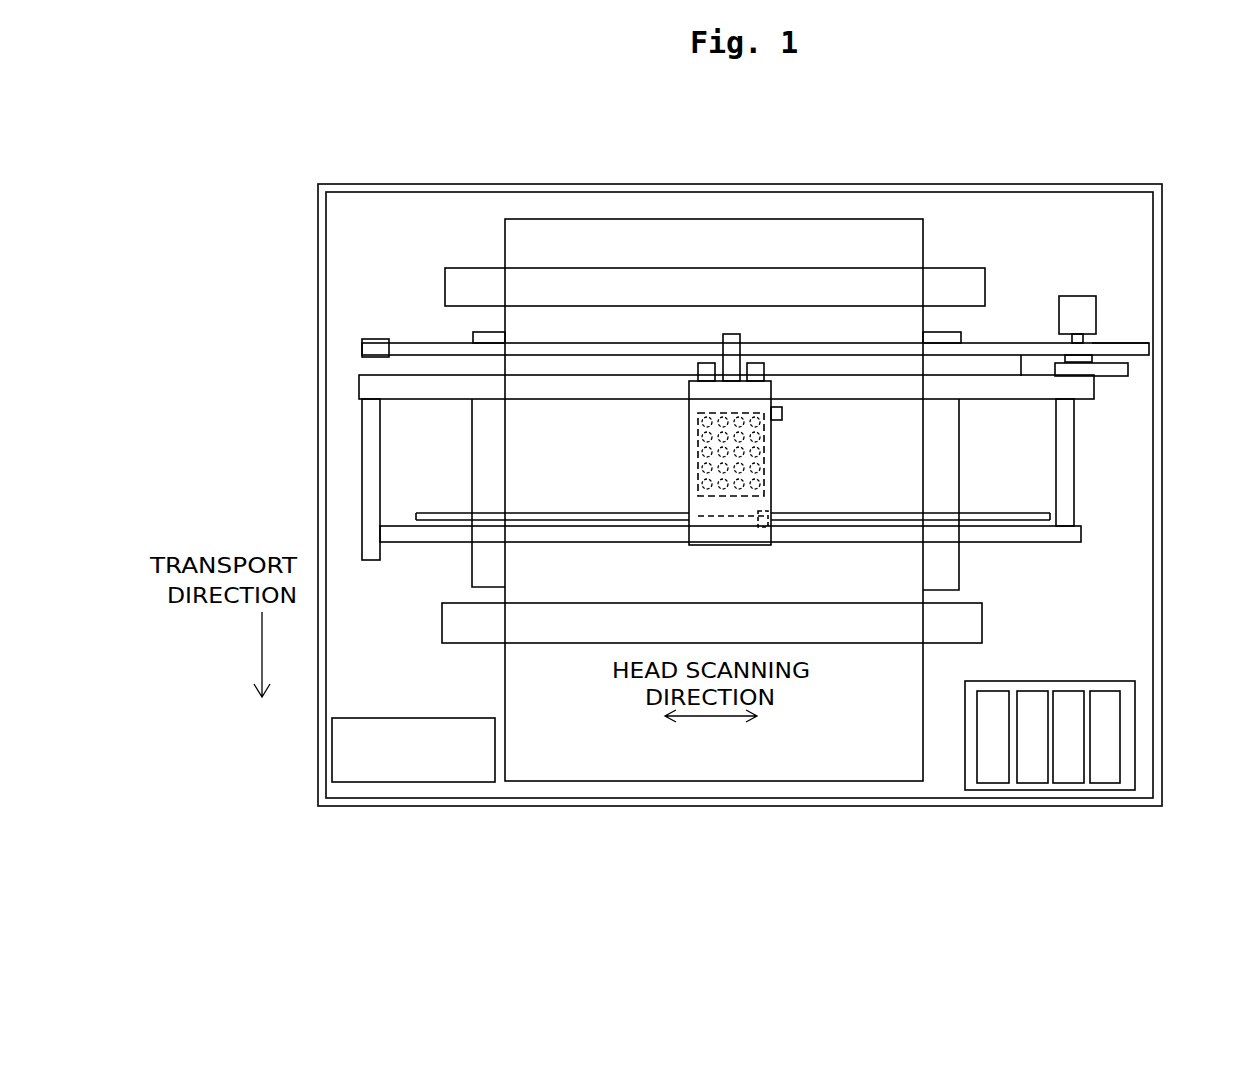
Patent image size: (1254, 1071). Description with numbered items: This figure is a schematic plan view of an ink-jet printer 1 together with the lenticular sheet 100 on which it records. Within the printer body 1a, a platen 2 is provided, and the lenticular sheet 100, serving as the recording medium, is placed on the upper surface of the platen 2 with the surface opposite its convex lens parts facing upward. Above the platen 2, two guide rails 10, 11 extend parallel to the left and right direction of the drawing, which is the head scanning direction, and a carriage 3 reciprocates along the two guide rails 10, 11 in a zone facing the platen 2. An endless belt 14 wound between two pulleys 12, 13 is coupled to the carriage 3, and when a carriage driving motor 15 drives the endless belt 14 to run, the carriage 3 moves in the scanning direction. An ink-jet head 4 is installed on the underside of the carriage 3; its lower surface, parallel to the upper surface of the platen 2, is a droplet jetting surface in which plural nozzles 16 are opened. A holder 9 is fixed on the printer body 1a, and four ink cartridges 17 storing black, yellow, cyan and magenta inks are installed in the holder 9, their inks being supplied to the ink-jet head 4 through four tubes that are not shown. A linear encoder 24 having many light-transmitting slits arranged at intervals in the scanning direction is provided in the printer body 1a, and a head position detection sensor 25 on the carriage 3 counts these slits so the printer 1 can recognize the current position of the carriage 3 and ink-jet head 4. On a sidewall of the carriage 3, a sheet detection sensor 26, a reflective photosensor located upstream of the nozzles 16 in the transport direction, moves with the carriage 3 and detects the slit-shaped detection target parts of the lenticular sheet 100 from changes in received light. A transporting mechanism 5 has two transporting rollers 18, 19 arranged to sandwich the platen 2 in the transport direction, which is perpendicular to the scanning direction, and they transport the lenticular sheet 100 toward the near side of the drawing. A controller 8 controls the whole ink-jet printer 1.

The ink-jet printer 1 is at (1108, 152).
The printer body 1a is at (829, 184).
The platen 2 is at (472, 570).
The carriage 3 is at (723, 532).
The ink-jet head 4 is at (764, 462).
The transporting mechanism 5 is at (985, 262).
The controller 8 is at (332, 752).
The holder 9 is at (1135, 722).
The guide rail 10 is at (1021, 355).
The guide rail 11 is at (1027, 542).
The pulley 12 is at (1090, 343).
The pulley 13 is at (378, 339).
The endless belt 14 is at (990, 343).
The carriage driving motor 15 is at (1072, 308).
The nozzles 16 is at (702, 440).
The ink cartridges 17 is at (1105, 778).
The transporting roller 18 is at (943, 292).
The transporting roller 19 is at (955, 645).
The linear encoder 24 is at (993, 513).
The head position detection sensor 25 is at (768, 545).
The sheet detection sensor 26 is at (782, 412).
The lenticular sheet 100 is at (520, 668).